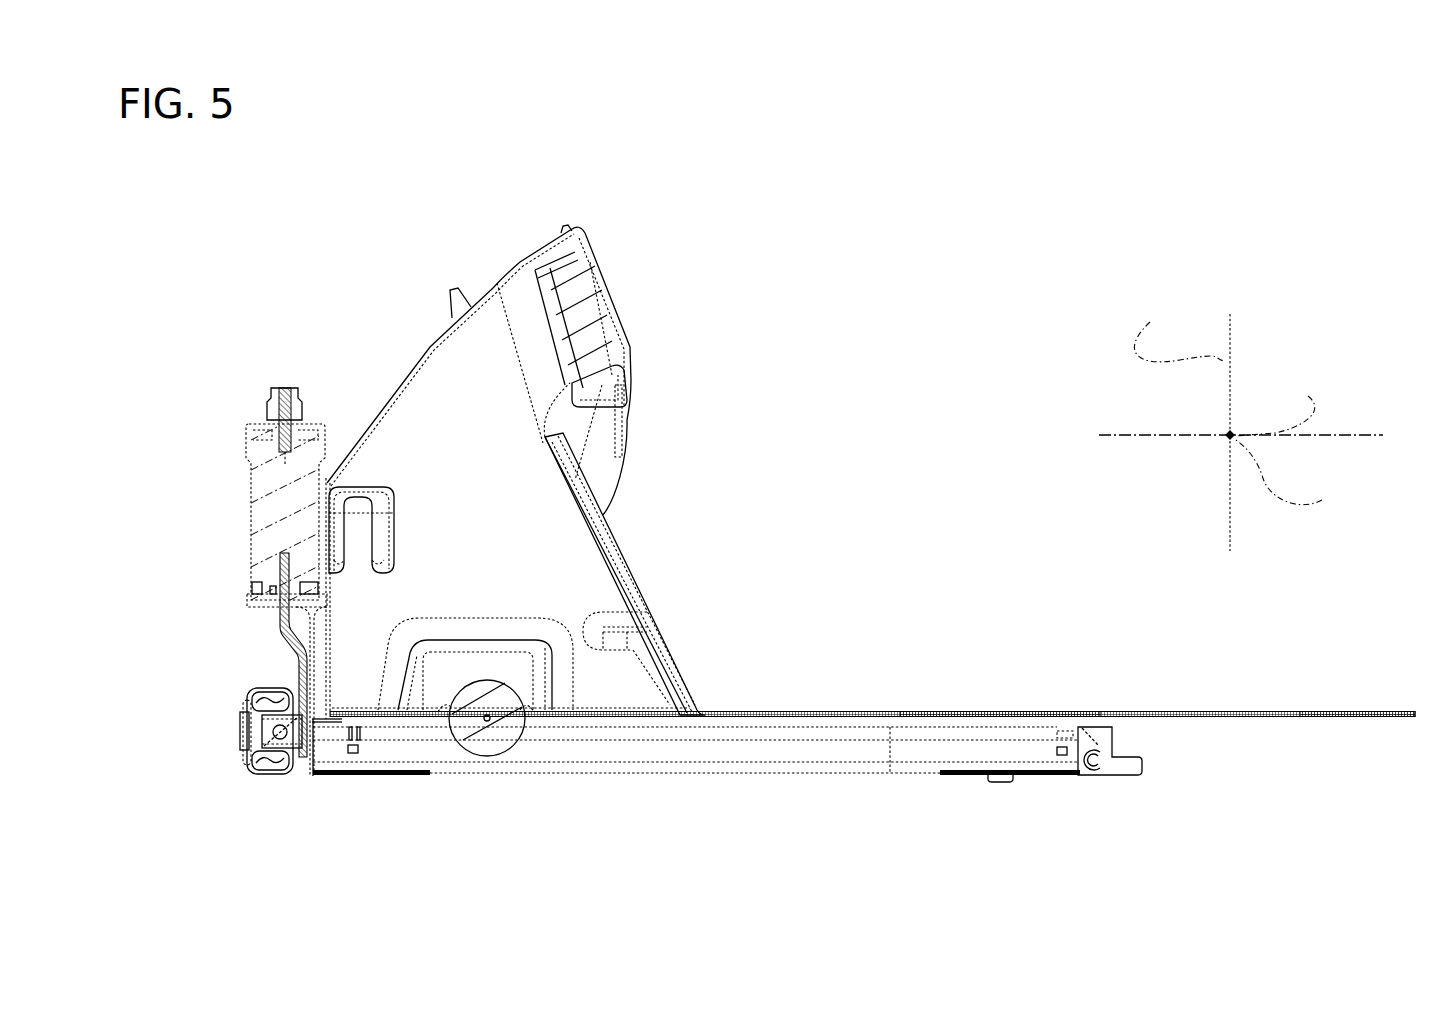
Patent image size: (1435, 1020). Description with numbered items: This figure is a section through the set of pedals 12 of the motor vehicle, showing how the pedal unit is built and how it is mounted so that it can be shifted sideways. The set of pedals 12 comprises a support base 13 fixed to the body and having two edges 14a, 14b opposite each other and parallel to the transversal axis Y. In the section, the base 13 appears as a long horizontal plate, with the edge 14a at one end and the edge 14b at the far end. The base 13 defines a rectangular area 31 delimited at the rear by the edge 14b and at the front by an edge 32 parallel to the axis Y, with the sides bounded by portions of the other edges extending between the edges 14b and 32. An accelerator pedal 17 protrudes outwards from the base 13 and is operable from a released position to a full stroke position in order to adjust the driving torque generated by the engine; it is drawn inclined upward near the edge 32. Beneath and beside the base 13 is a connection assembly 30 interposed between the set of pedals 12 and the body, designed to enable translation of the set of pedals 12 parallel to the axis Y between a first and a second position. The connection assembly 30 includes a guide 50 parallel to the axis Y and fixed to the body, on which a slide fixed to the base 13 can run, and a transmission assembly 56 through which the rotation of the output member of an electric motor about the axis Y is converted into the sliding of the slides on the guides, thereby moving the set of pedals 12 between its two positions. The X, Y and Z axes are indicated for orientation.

The set of pedals 12 is at (1262, 212).
The support base 13 is at (1163, 692).
The edge 14a is at (287, 635).
The edge 14b is at (1404, 700).
The accelerator pedal 17 is at (632, 307).
The connection assembly 30 is at (215, 657).
The rectangular area 31 is at (993, 695).
The edge 32 is at (713, 697).
The guide 50 is at (242, 681).
The transmission assembly 56 is at (240, 728).